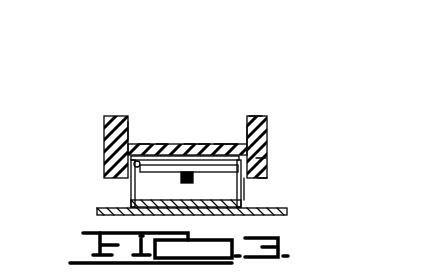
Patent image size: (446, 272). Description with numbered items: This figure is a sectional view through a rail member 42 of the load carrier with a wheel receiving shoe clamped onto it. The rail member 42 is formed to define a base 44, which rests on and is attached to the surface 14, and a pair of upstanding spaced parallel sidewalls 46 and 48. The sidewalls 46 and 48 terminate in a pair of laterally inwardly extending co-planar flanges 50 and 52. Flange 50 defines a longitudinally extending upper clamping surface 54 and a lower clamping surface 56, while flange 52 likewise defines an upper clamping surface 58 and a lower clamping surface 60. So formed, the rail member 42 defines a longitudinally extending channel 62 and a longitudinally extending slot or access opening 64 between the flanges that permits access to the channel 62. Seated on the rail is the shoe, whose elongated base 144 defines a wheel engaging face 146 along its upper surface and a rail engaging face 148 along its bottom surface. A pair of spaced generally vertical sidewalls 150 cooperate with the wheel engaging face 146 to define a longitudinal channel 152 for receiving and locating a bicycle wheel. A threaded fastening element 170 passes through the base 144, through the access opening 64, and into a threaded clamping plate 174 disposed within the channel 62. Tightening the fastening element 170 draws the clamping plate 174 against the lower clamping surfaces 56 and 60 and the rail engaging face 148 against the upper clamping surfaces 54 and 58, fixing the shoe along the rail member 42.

The surface 14 is at (97, 212).
The rail member 42 is at (218, 192).
The base 44 is at (198, 208).
The sidewall 46 is at (130, 194).
The sidewall 48 is at (270, 170).
The flange 50 is at (162, 143).
The flange 52 is at (219, 143).
The upper clamping surface 54 is at (144, 143).
The lower clamping surface 56 is at (132, 166).
The upper clamping surface 58 is at (232, 143).
The lower clamping surface 60 is at (255, 118).
The channel 62 is at (245, 198).
The access opening 64 is at (204, 143).
The base 144 is at (182, 143).
The wheel engaging face 146 is at (130, 133).
The rail engaging face 148 is at (134, 162).
The sidewall 150 is at (104, 125).
The channel 152 is at (247, 125).
The threaded fastening element 170 is at (189, 143).
The clamping plate 174 is at (258, 158).